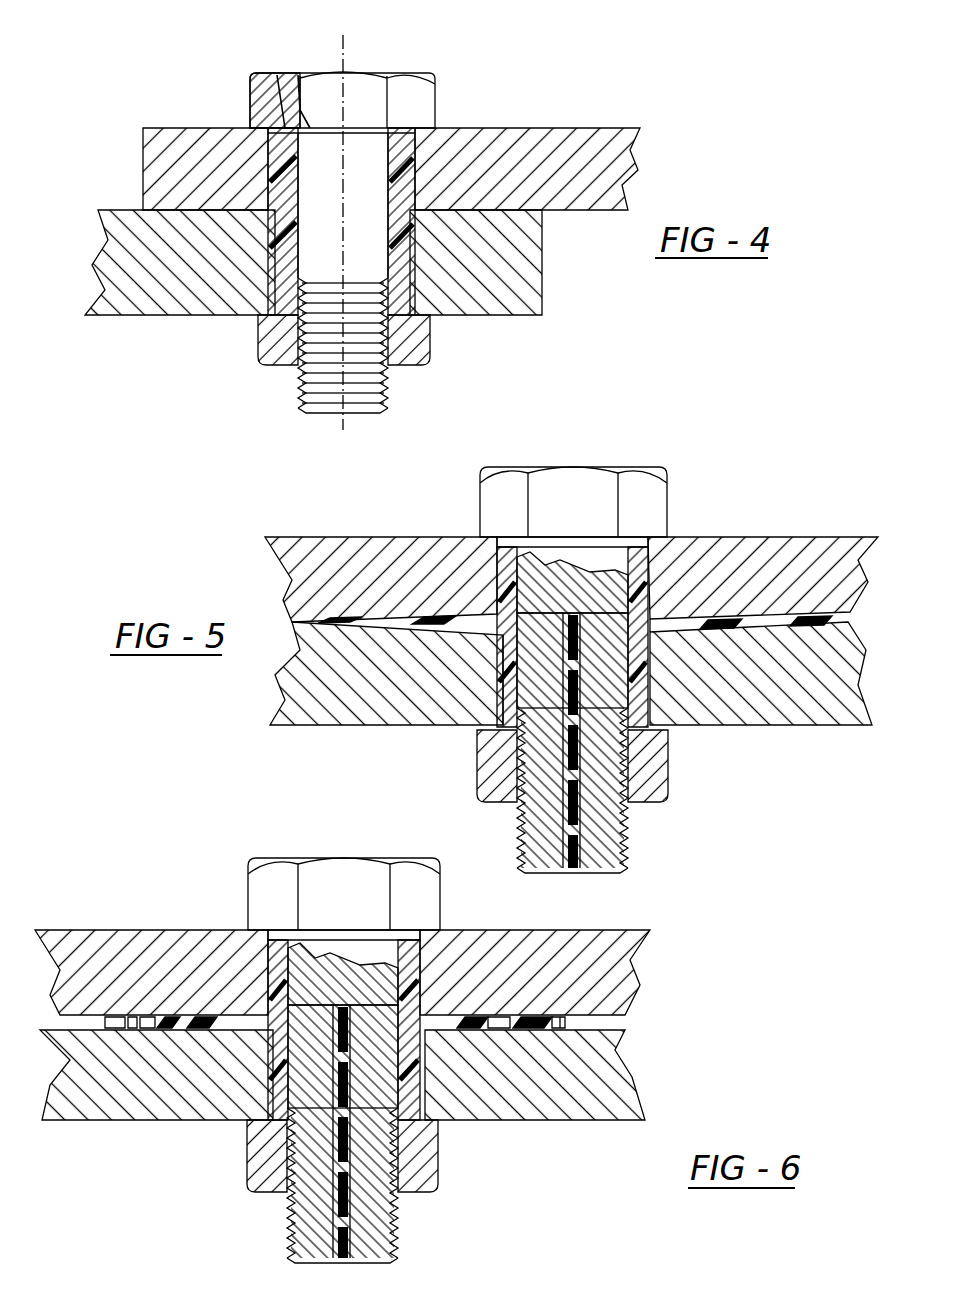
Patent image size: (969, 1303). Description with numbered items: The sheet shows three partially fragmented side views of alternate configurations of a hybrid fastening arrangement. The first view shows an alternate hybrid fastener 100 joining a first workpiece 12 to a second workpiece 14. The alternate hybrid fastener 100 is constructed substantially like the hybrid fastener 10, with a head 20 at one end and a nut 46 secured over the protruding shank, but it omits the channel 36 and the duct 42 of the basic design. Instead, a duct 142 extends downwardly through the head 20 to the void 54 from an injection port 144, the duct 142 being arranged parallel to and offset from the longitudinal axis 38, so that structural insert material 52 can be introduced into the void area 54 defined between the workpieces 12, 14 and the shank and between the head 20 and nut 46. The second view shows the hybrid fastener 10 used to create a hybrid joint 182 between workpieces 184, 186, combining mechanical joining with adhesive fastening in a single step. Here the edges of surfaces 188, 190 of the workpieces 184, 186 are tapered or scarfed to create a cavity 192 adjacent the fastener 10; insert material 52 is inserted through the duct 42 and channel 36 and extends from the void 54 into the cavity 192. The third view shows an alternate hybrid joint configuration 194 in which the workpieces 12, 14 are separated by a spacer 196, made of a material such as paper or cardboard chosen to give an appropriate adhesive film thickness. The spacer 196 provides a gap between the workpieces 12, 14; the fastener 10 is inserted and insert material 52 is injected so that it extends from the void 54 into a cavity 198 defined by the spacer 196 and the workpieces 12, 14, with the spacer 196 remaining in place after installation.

In FIG. 5, the hybrid fastener 10 is at (655, 462).
In FIG. 6, the hybrid fastener 10 is at (250, 855).
In FIG. 4, the first workpiece 12 is at (598, 178).
In FIG. 6, the first workpiece 12 is at (605, 968).
In FIG. 4, the second workpiece 14 is at (510, 270).
In FIG. 6, the second workpiece 14 is at (615, 1082).
In FIG. 4, the head 20 is at (413, 108).
In FIG. 5, the channel 36 is at (540, 593).
In FIG. 4, the longitudinal axis 38 is at (347, 50).
In FIG. 5, the duct 42 is at (582, 808).
In FIG. 4, the nut 46 is at (272, 345).
In FIG. 5, the structural insert material 52 is at (500, 585).
In FIG. 6, the structural insert material 52 is at (343, 1205).
In FIG. 4, the void area 54 is at (275, 170).
In FIG. 6, the void area 54 is at (277, 995).
In FIG. 4, the alternate hybrid fastener 100 is at (200, 100).
In FIG. 4, the duct 142 is at (360, 108).
In FIG. 4, the injection port 144 is at (290, 73).
In FIG. 5, the hybrid joint 182 is at (765, 482).
In FIG. 5, the workpiece 184 is at (818, 557).
In FIG. 5, the workpiece 186 is at (817, 690).
In FIG. 5, the surface 188 is at (690, 617).
In FIG. 5, the surface 190 is at (701, 632).
In FIG. 5, the cavity 192 is at (463, 630).
In FIG. 6, the alternate hybrid joint configuration 194 is at (195, 895).
In FIG. 6, the spacer 196 is at (577, 1028).
In FIG. 6, the cavity 198 is at (502, 1028).